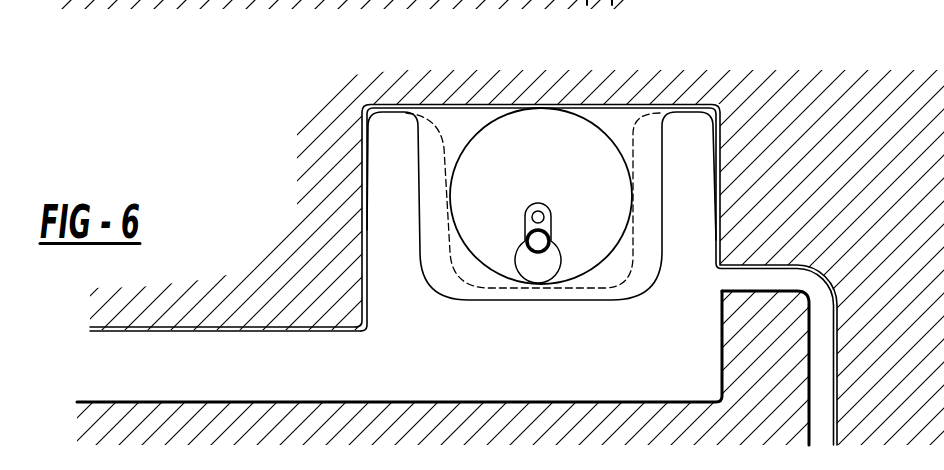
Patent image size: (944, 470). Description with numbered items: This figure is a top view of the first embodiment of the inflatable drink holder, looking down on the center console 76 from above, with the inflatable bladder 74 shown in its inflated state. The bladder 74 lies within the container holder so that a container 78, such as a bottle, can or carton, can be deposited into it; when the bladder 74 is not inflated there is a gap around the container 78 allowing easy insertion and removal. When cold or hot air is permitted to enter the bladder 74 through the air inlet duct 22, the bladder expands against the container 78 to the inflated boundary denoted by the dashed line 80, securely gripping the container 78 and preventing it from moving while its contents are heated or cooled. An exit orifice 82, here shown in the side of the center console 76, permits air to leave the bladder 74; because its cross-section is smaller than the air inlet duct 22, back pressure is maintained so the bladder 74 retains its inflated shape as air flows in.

The air inlet duct 22 is at (143, 330).
The inflatable bladder 74 is at (550, 362).
The center console 76 is at (318, 203).
The container 78 is at (555, 163).
The dashed line 80 is at (633, 134).
The exit orifice 82 is at (729, 286).